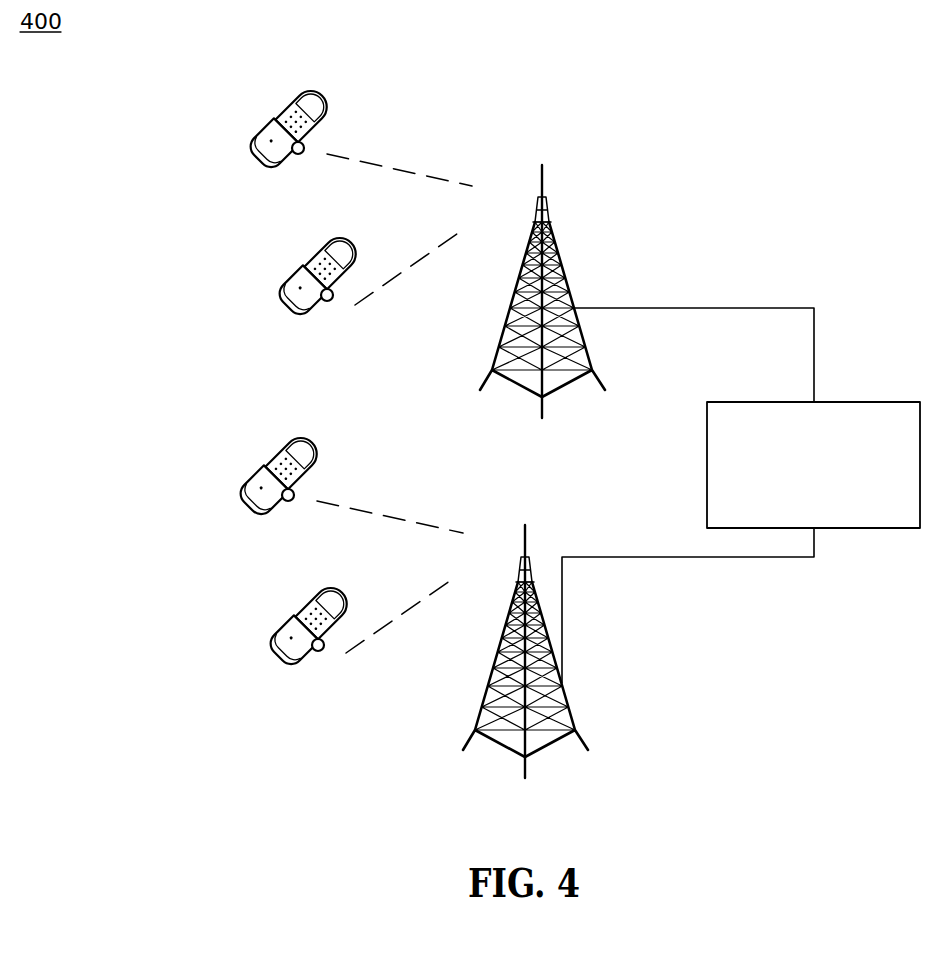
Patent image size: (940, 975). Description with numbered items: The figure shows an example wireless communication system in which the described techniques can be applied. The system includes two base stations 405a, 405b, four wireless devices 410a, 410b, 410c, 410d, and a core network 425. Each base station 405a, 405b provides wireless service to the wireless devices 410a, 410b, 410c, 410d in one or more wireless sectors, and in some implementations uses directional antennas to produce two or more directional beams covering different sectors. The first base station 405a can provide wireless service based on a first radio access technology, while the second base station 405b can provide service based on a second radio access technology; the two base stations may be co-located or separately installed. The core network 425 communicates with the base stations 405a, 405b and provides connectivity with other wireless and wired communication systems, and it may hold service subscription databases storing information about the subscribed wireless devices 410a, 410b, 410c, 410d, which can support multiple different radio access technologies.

The base station 405a is at (557, 250).
The base station 405b is at (530, 565).
The wireless device 410a is at (287, 104).
The wireless device 410b is at (314, 253).
The wireless device 410c is at (276, 452).
The wireless device 410d is at (306, 601).
The core network 425 is at (725, 402).